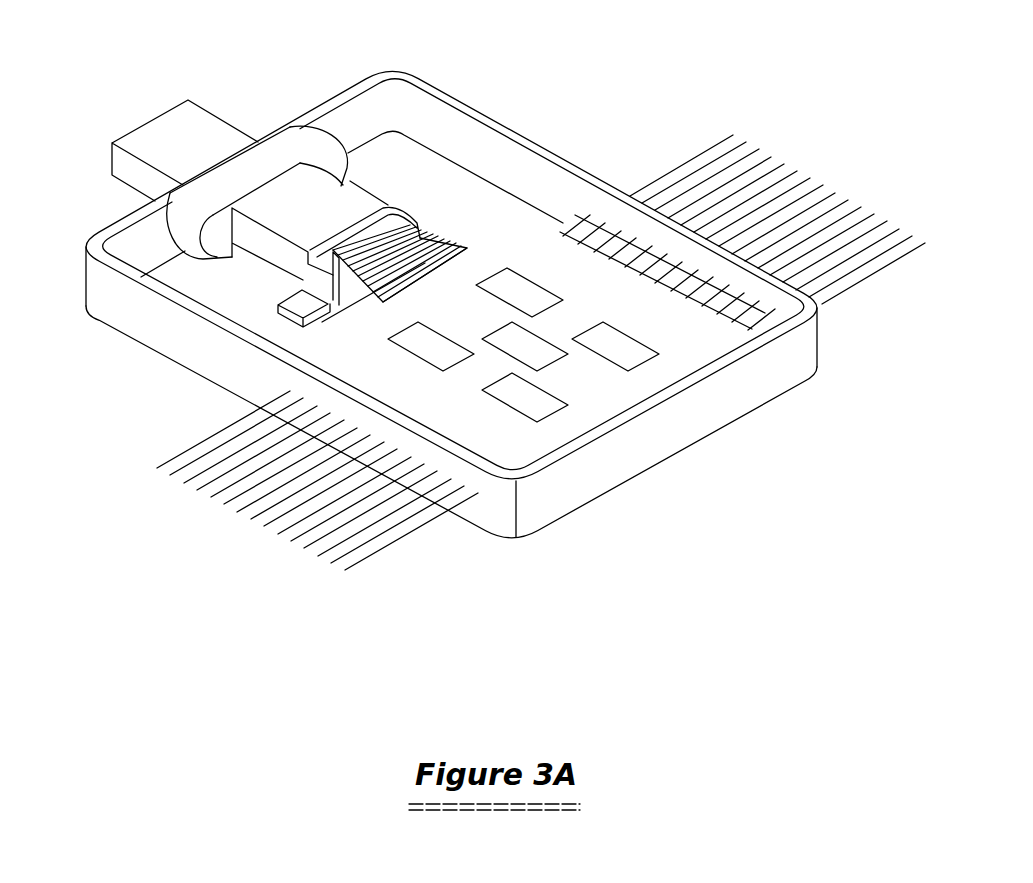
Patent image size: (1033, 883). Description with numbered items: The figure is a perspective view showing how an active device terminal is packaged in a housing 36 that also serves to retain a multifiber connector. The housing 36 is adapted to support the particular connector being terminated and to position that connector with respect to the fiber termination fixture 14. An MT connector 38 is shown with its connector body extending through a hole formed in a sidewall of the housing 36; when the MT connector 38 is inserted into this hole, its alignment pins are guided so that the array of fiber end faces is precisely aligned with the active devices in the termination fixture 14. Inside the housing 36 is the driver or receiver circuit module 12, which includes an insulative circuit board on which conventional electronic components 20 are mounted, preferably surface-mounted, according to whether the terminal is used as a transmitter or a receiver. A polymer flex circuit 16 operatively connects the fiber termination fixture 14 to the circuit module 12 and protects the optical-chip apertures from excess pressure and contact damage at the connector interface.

The circuit module 12 is at (523, 447).
The fiber termination fixture 14 is at (302, 280).
The flex circuit 16 is at (420, 237).
The electronic components 20 is at (640, 355).
The housing 36 is at (817, 330).
The MT connector 38 is at (317, 188).